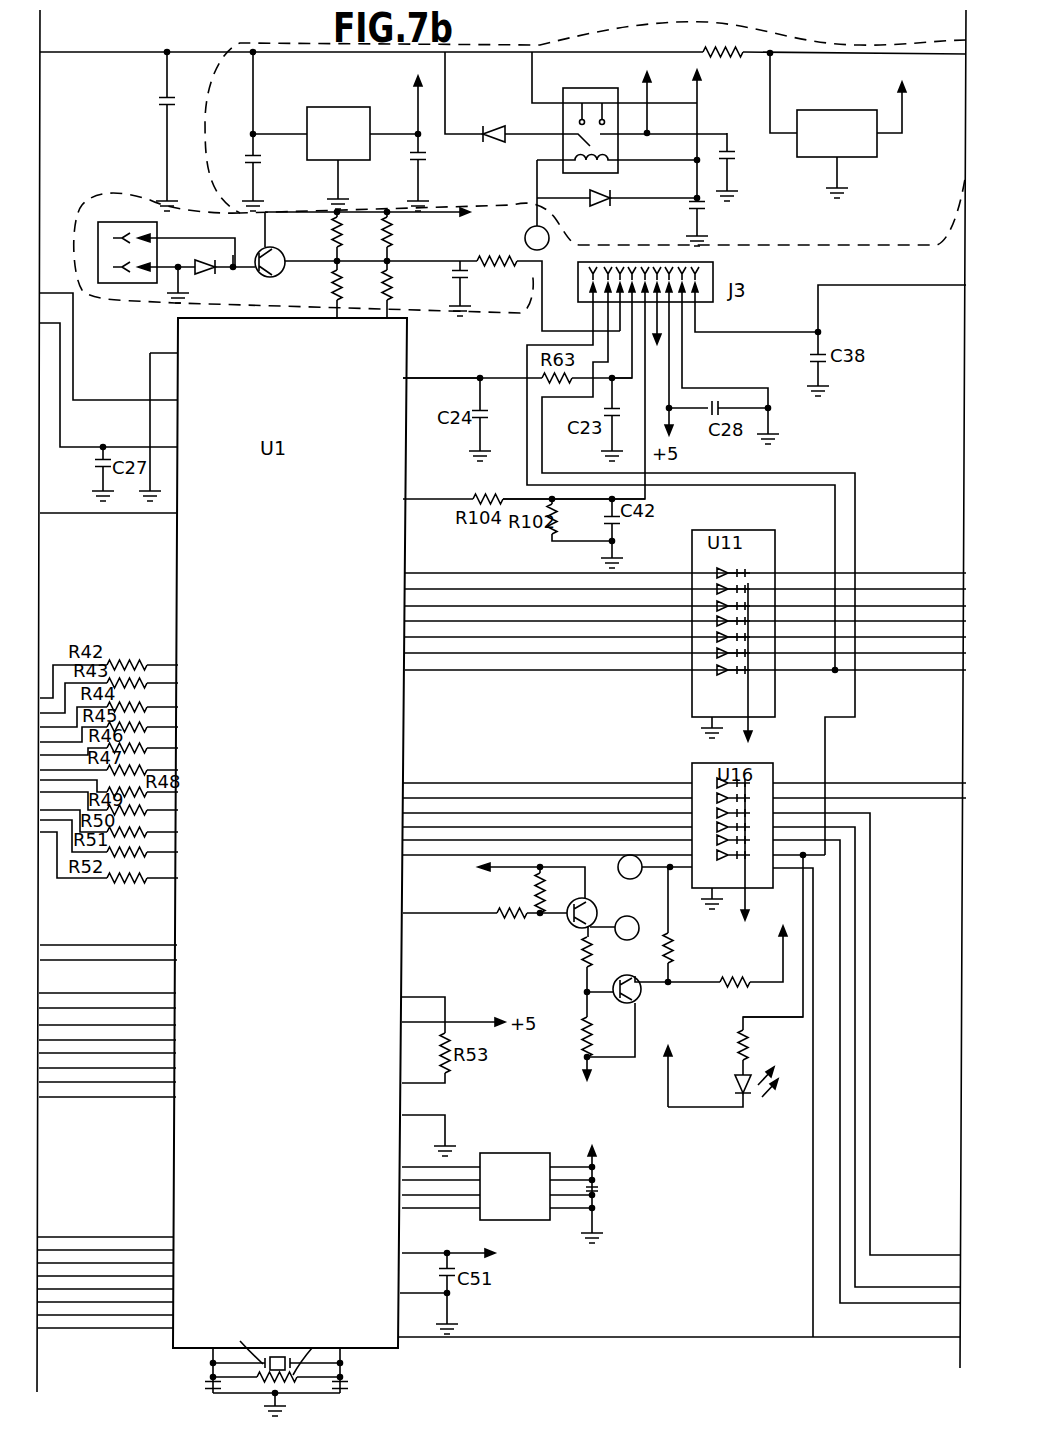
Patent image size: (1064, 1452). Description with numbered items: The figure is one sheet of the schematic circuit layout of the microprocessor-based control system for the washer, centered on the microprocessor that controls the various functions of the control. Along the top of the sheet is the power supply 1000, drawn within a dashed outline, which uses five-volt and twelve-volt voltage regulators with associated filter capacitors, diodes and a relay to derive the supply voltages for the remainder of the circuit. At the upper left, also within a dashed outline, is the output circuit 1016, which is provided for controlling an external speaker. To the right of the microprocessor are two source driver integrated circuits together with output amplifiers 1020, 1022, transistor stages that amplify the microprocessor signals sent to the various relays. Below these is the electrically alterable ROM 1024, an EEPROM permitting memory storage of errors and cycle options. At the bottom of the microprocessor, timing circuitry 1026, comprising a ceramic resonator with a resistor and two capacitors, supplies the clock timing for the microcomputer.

The power supply 1000 is at (277, 43).
The output circuit 1016 is at (147, 298).
The output amplifier 1020 is at (562, 940).
The output amplifier 1022 is at (644, 1040).
The electrically alterable ROM 1024 is at (550, 1222).
The timing circuitry 1026 is at (403, 1381).